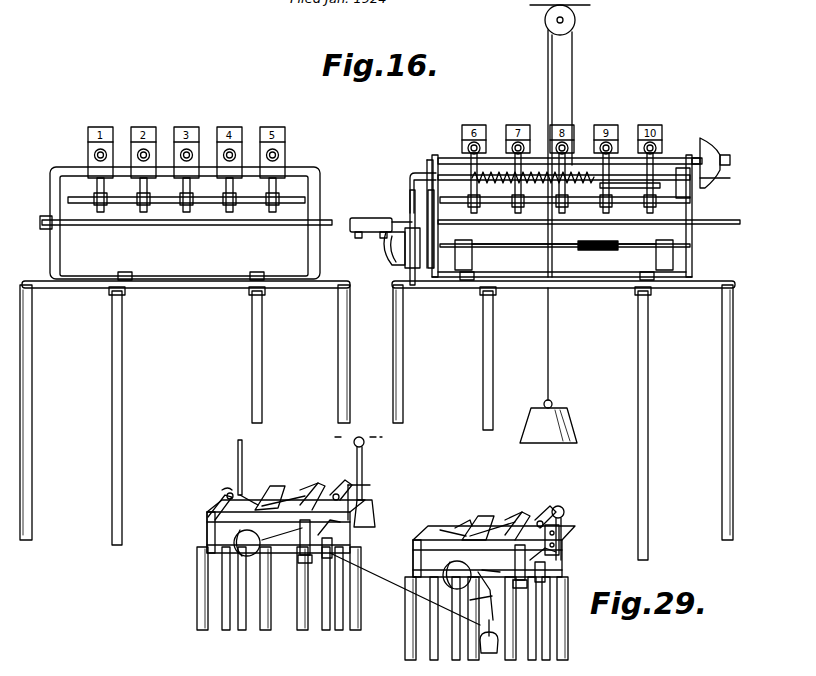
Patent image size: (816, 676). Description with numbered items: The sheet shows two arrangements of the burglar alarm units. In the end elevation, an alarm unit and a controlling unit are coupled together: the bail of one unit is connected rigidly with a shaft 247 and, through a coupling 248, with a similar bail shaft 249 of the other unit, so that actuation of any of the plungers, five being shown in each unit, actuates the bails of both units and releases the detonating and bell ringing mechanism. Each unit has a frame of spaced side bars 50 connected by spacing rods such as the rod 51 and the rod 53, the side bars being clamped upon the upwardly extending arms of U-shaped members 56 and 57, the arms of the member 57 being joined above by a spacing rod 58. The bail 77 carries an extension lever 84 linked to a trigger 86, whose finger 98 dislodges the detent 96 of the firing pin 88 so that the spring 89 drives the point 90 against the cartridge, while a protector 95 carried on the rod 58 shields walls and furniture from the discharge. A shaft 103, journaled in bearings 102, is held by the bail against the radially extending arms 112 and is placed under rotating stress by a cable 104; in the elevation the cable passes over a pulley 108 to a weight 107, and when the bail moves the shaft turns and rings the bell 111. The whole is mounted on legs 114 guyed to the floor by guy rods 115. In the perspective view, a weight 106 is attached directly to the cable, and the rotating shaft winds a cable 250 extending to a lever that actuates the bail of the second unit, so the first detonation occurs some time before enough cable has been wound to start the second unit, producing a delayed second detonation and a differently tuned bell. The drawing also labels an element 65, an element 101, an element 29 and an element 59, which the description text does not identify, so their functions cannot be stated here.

In FIG. 16, the pulley 108 is at (576, 19).
In FIG. 16, the spring 89 is at (492, 172).
In FIG. 16, the spacing rod 58 is at (578, 160).
In FIG. 29, the spacing rod 58 is at (650, 669).
In FIG. 16, the protector 95 is at (712, 138).
In FIG. 29, the protector 95 is at (366, 488).
In FIG. 16, the detent 96 is at (426, 190).
In FIG. 16, the finger 98 is at (412, 175).
In FIG. 16, the extension lever 84 is at (400, 224).
In FIG. 29, the extension lever 84 is at (286, 548).
In FIG. 16, the trigger 86 is at (410, 232).
In FIG. 29, the trigger 86 is at (305, 560).
In FIG. 16, the coupling 248 is at (370, 234).
In FIG. 16, the bell 111 is at (394, 262).
In FIG. 29, the bell 111 is at (247, 556).
In FIG. 16, the U-shaped member 57 is at (315, 250).
In FIG. 29, the U-shaped member 57 is at (322, 560).
In FIG. 16, the bail shaft 249 is at (196, 222).
In FIG. 16, the shaft 247 is at (526, 225).
In FIG. 16, the cord or cable 104 is at (592, 244).
In FIG. 16, the bearings 102 is at (473, 256).
In FIG. 16, the shaft 103 is at (522, 250).
In FIG. 16, the firing pin 88 is at (636, 182).
In FIG. 16, the point 90 is at (678, 178).
In FIG. 16, the legs 114 is at (32, 433).
In FIG. 29, the legs 114 is at (580, 630).
In FIG. 16, the guy rods 115 is at (122, 405).
In FIG. 29, the guy rods 115 is at (240, 630).
In FIG. 16, the weight 107 is at (570, 414).
In FIG. 29, the rod 65 is at (238, 452).
In FIG. 29, the lever 101 is at (218, 506).
In FIG. 29, the U-shaped member 56 is at (207, 528).
In FIG. 29, the side bars 50 is at (232, 536).
In FIG. 29, the bail 77 is at (318, 483).
In FIG. 29, the radially extending arms 112 is at (342, 483).
In FIG. 29, the cable 250 is at (408, 593).
In FIG. 29, the spacing rod 51 is at (462, 520).
In FIG. 29, the spacing rod 53 is at (560, 543).
In FIG. 29, the cord 29 is at (495, 612).
In FIG. 29, the weight 106 is at (486, 656).
In FIG. 29, the shaft 59 is at (571, 669).